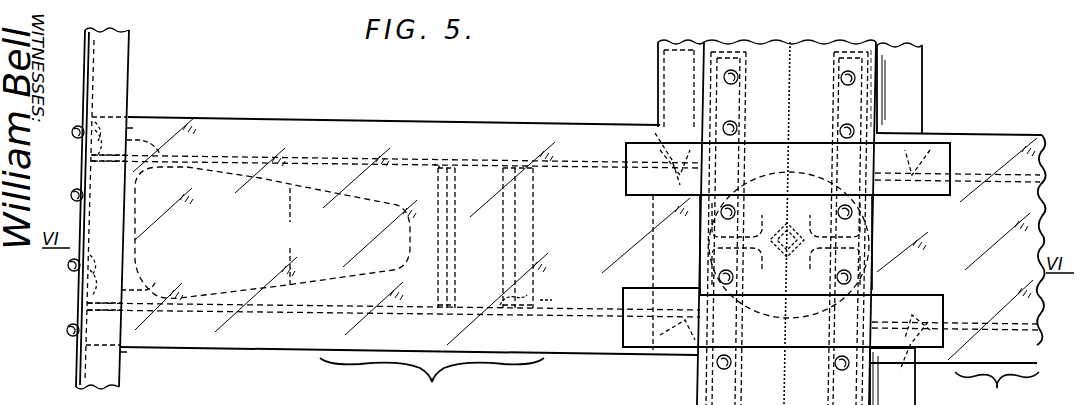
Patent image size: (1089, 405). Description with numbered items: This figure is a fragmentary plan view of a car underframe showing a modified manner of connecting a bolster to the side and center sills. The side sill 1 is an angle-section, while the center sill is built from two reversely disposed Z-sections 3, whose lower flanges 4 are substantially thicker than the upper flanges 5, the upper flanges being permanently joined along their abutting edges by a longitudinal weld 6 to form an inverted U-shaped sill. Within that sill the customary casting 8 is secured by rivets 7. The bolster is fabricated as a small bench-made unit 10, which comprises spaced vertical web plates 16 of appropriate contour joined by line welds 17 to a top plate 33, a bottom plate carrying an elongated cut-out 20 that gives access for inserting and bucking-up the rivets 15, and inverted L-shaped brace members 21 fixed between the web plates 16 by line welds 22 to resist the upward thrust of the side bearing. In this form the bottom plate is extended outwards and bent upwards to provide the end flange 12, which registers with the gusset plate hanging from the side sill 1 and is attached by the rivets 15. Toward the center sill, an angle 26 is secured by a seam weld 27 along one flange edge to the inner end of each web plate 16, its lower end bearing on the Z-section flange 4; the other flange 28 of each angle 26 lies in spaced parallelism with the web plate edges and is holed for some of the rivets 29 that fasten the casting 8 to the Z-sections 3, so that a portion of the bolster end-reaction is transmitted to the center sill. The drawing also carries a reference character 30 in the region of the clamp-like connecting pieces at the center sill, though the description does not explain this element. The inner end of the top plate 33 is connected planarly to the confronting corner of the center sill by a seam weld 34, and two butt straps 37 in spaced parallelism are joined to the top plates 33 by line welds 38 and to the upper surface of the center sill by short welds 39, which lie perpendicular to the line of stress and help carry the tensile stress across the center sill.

The side sill 1 is at (130, 52).
The Z-section 3 is at (819, 44).
The lower flange 4 is at (955, 68).
The upper flange 5 is at (860, 48).
The longitudinal weld 6 is at (790, 66).
The rivet 7 is at (847, 124).
The casting 8 is at (752, 336).
The bolster unit 10 is at (1005, 395).
The end flange 12 is at (125, 228).
The rivet 15 is at (70, 324).
The web plate 16 is at (312, 318).
The line weld 17 is at (137, 245).
The cut-out 20 is at (272, 232).
The brace member 21 is at (475, 238).
The line weld 22 is at (481, 235).
The angle 26 is at (940, 378).
The seam weld 27 is at (801, 236).
The flange 28 is at (897, 362).
The rivet 29 is at (789, 242).
The keys 30 is at (795, 245).
The top plate 33 is at (408, 130).
The seam weld 34 is at (882, 226).
The butt strap 37 is at (809, 344).
The line weld 38 is at (950, 290).
The line weld 39 is at (770, 352).